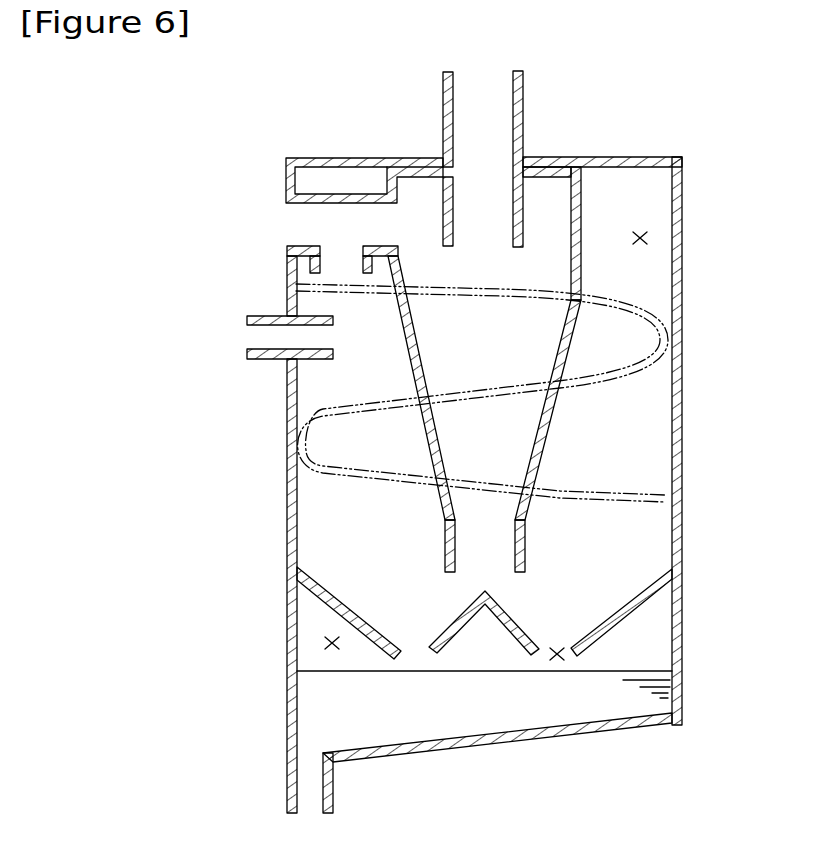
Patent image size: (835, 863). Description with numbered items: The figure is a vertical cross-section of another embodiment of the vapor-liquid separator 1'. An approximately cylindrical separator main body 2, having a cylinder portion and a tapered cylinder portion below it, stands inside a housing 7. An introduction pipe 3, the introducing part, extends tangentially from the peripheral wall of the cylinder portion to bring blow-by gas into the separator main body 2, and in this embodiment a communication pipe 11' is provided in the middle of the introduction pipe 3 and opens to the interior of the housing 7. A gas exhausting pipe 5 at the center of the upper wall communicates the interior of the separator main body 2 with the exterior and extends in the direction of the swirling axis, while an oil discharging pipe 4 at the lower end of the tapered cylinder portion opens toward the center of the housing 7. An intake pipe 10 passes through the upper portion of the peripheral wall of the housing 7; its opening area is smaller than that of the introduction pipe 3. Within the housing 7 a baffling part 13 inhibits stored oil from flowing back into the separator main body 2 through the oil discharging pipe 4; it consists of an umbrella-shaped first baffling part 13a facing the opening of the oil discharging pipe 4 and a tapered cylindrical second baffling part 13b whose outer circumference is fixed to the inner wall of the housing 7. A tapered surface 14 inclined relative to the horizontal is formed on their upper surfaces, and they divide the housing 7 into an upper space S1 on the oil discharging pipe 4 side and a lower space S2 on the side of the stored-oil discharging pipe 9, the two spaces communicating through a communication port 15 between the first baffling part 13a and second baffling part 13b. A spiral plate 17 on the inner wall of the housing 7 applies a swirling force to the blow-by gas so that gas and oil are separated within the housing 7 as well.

The vapor-liquid separator 1' is at (552, 485).
The separator main body 2 is at (552, 433).
The introduction pipe 3 is at (326, 194).
The oil discharging pipe 4 is at (525, 548).
The gas exhausting pipe 5 is at (523, 102).
The housing 7 is at (683, 437).
The stored-oil discharging pipe 9 is at (336, 784).
The intake pipe 10 is at (263, 316).
The communication pipe 11' is at (295, 251).
The baffling part 13 is at (602, 582).
The first baffling part 13a is at (513, 613).
The second baffling part 13b is at (627, 616).
The tapered surface 14 is at (445, 628).
The communication port 15 is at (553, 660).
The spiral plate 17 is at (636, 313).
The space on the oil discharging pipe side S1 is at (642, 239).
The space on the stored-oil discharging pipe side S2 is at (325, 643).